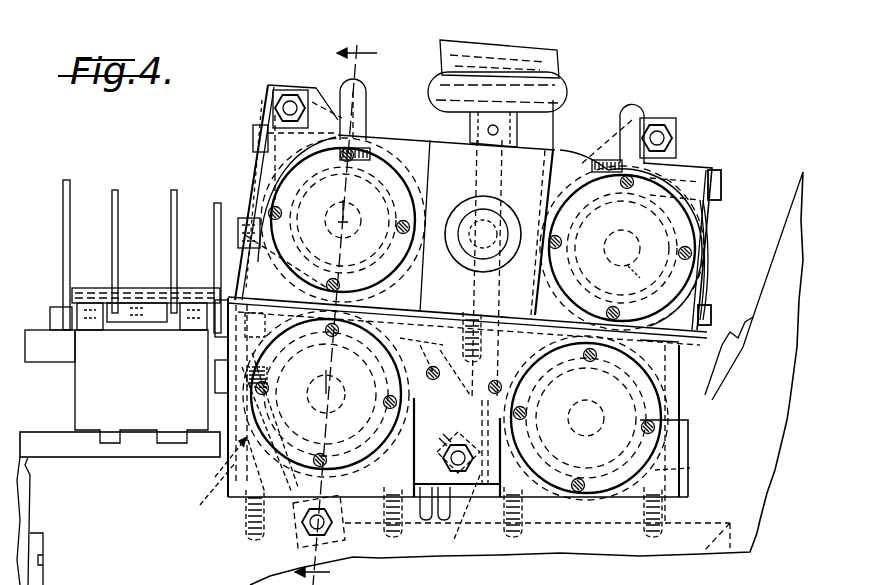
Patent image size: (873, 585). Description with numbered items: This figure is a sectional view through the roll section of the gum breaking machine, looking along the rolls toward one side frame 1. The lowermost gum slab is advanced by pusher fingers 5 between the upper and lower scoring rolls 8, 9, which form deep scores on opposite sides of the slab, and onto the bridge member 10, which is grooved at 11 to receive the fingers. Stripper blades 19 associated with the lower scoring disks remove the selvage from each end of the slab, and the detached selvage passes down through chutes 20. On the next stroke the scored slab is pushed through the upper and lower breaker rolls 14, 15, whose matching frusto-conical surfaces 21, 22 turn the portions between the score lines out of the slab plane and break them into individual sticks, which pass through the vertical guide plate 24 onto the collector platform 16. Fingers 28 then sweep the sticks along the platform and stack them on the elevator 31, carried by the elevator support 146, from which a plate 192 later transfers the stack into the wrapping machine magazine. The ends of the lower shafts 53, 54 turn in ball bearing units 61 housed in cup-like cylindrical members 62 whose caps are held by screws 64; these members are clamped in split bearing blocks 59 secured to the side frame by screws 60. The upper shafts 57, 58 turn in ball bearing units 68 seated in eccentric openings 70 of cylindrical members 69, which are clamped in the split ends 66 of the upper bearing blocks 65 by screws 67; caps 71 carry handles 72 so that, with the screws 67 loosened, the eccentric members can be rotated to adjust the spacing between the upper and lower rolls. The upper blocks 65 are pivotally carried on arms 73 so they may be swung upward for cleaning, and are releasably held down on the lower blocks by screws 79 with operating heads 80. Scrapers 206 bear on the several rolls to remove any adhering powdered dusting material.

The side frame 1 is at (762, 494).
The pusher fingers 5 is at (345, 315).
The upper scoring roll 8 is at (718, 256).
The lower scoring roll 9 is at (690, 378).
The bridge member 10 is at (457, 412).
The grooves 11 is at (433, 337).
The upper breaker roll 14 is at (250, 173).
The lower breaker roll 15 is at (204, 485).
The collector platform 16 is at (92, 283).
The stripper blades 19 is at (538, 300).
The chutes 20 is at (633, 525).
The frusto-conical surfaces of upper breaker roll 21 is at (263, 163).
The frusto-conical surfaces of lower breaker roll 22 is at (215, 462).
The vertical guide plate 24 is at (248, 218).
The fingers 28 is at (173, 210).
The elevator 31 is at (136, 452).
The shaft 53 is at (551, 439).
The shaft 54 is at (371, 397).
The upper shaft 57 is at (622, 248).
The upper shaft 58 is at (343, 220).
The split bearing block 59 is at (675, 395).
The screws 60 is at (690, 468).
The ball bearing units 61 is at (584, 429).
The cup-like cylindrical members 62 is at (590, 495).
The screws 64 is at (320, 470).
The upper bearing block 65 is at (420, 145).
The split ends 66 is at (322, 128).
The screws 67 is at (255, 135).
The ball bearing units 68 is at (643, 267).
The cylindrical members 69 is at (710, 296).
The eccentric openings 70 is at (702, 226).
The caps 71 is at (482, 236).
The handles 72 is at (362, 110).
The arms 73 is at (475, 197).
The screws 79 is at (482, 180).
The operating heads 80 is at (566, 100).
The elevator support 146 is at (29, 503).
The plate 192 is at (85, 412).
The scrapers 206 is at (254, 145).